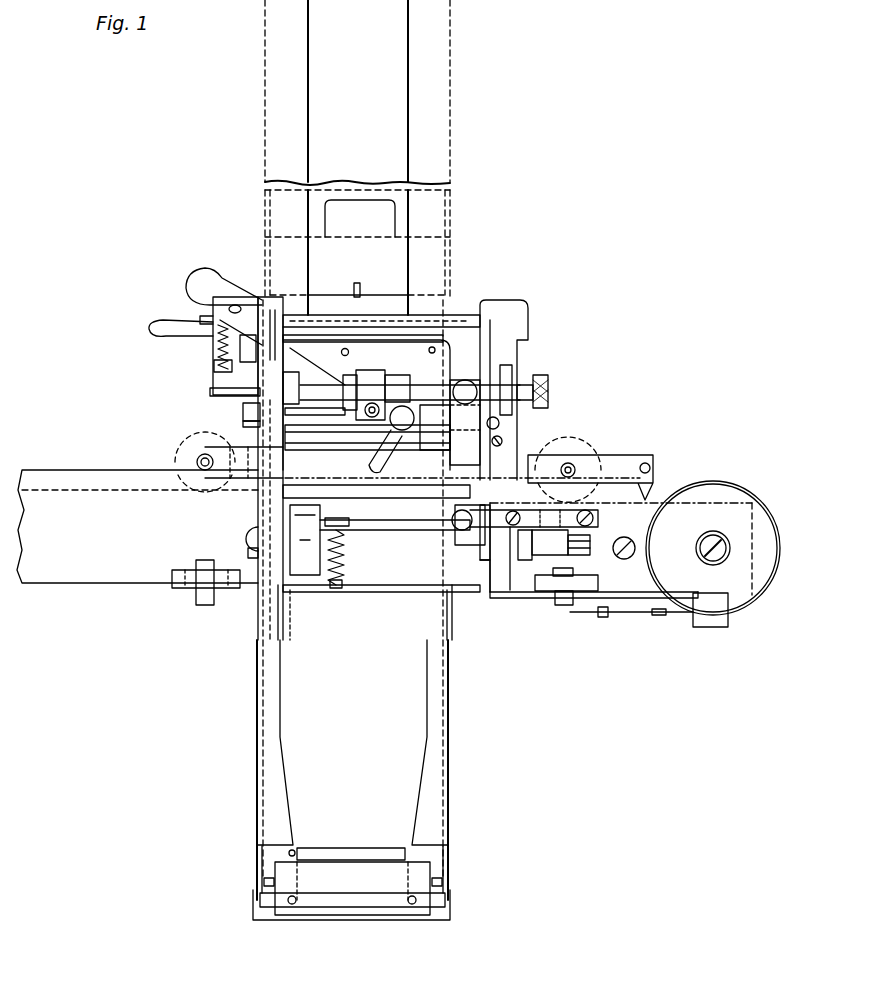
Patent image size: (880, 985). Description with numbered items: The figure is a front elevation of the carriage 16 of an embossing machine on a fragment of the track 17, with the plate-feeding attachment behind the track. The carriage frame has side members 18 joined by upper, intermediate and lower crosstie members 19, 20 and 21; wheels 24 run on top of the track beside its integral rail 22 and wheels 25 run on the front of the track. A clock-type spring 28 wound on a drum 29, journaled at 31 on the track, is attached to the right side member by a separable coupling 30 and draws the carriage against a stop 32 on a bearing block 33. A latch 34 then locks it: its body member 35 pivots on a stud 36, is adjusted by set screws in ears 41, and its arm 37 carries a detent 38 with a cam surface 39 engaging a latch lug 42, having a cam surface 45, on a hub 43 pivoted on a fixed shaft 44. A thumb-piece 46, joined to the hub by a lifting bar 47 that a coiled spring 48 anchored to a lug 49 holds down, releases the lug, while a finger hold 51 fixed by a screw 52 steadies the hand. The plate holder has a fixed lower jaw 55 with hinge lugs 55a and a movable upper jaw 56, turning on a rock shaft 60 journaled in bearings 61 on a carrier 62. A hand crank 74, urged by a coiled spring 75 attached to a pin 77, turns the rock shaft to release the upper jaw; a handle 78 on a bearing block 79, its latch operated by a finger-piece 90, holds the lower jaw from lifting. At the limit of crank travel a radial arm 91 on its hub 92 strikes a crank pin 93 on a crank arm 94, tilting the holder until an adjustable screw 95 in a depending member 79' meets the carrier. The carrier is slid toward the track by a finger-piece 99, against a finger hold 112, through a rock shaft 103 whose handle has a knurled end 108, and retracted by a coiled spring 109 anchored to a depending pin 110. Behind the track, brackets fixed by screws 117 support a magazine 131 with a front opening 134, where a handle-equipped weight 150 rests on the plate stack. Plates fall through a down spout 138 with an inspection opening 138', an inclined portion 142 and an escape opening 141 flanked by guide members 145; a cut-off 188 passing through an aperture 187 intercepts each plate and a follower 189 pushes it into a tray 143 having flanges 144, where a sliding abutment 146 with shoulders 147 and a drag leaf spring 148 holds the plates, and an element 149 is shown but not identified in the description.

The carriage 16 is at (230, 415).
The track 17 is at (64, 580).
The side members 18 is at (524, 308).
The upper crosstie member 19 is at (442, 332).
The intermediate crosstie member 20 is at (322, 486).
The lower crosstie member 21 is at (394, 586).
The rail 22 is at (98, 472).
The wheels 24 is at (180, 455).
The wheels 25 is at (196, 574).
The spring 28 is at (690, 615).
The drum 29 is at (758, 506).
The separable coupling 30 is at (610, 616).
The journal 31 is at (698, 544).
The stop 32 is at (531, 553).
The bearing block 33 is at (566, 553).
The latch 34 is at (504, 528).
The body member 35 is at (536, 510).
The stud 36 is at (594, 510).
The arm 37 is at (480, 540).
The detent 38 is at (456, 512).
The cam surface 39 is at (456, 530).
The ears 41 is at (592, 524).
The latch lug 42 is at (460, 546).
The hub 43 is at (478, 570).
The shaft 44 is at (340, 520).
The cam surface 45 is at (460, 492).
The thumb-piece 46 is at (376, 490).
The lifting bar 47 is at (400, 538).
The coiled spring 48 is at (346, 564).
The lug 49 is at (338, 590).
The finger hold 51 is at (268, 396).
The screw 52 is at (248, 552).
The lower jaw 55 is at (350, 378).
The hinge lugs 55a is at (410, 368).
The upper jaw 56 is at (359, 506).
The rock shaft 60 is at (234, 393).
The bearings 61 is at (292, 378).
The carrier 62 is at (440, 445).
The hand crank 74 is at (158, 330).
The coiled spring 75 is at (214, 366).
The pin 77 is at (213, 318).
The handle 78 is at (210, 280).
The bearing block 79 is at (363, 357).
The depending member 79' is at (315, 413).
The finger-piece 90 is at (360, 296).
The radial arm 91 is at (216, 352).
The hub 92 is at (246, 400).
The crank pin 93 is at (210, 388).
The crank arm 94 is at (248, 360).
The adjustable screw 95 is at (372, 460).
The finger-piece 99 is at (486, 420).
The rock shaft 103 is at (244, 462).
The knurled outer end portion 108 is at (408, 440).
The coiled spring 109 is at (384, 470).
The depending pin 110 is at (406, 462).
The finger hold 112 is at (538, 452).
The screws 117 is at (250, 536).
The magazine 131 is at (452, 144).
The opening 134 is at (312, 128).
The down spout 138 is at (374, 600).
The intermediate opening 138' is at (352, 742).
The escape opening 141 is at (447, 857).
The inclined portion 142 is at (422, 776).
The tray 143 is at (256, 918).
The flanges 144 is at (262, 882).
The guide members 145 is at (260, 860).
The abutment 146 is at (356, 905).
The shoulders 147 is at (446, 893).
The leaf spring 148 is at (386, 888).
The screw 149 is at (432, 912).
The handle-equipped weight 150 is at (345, 252).
The aperture 187 is at (294, 850).
The cut-off 188 is at (346, 850).
The follower 189 is at (302, 910).